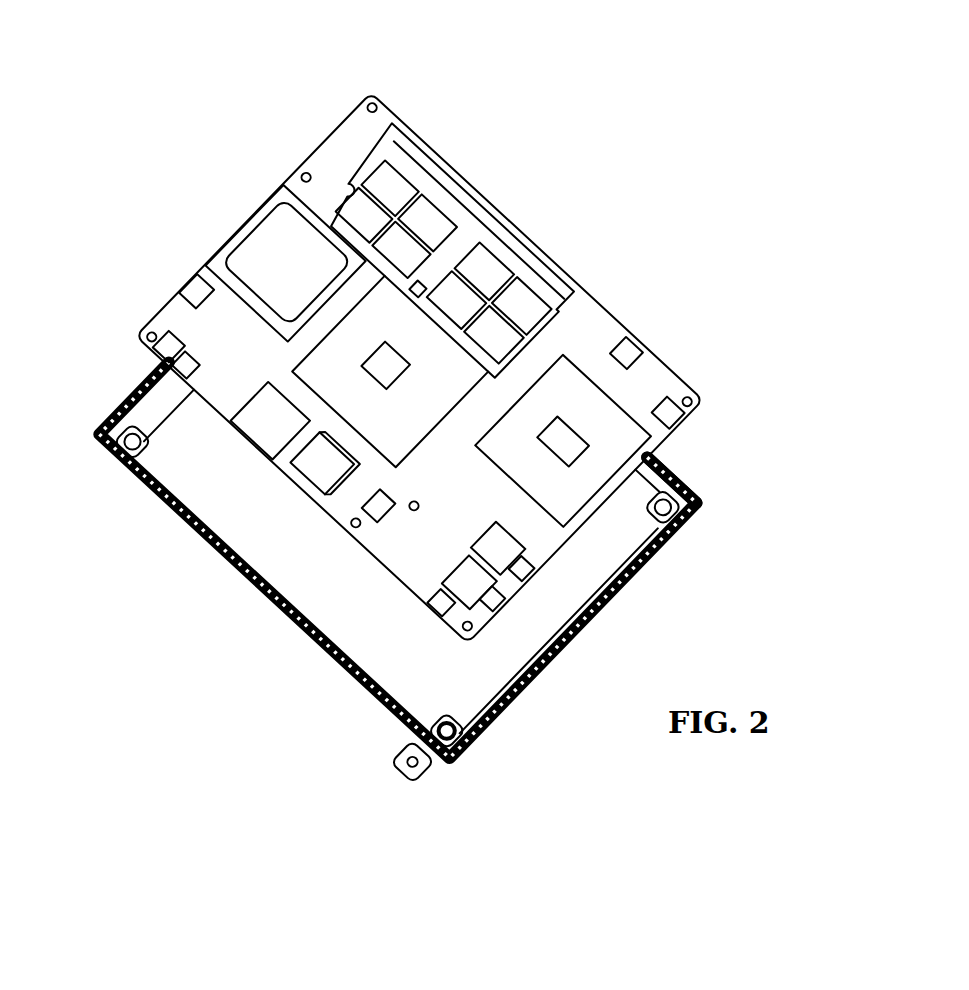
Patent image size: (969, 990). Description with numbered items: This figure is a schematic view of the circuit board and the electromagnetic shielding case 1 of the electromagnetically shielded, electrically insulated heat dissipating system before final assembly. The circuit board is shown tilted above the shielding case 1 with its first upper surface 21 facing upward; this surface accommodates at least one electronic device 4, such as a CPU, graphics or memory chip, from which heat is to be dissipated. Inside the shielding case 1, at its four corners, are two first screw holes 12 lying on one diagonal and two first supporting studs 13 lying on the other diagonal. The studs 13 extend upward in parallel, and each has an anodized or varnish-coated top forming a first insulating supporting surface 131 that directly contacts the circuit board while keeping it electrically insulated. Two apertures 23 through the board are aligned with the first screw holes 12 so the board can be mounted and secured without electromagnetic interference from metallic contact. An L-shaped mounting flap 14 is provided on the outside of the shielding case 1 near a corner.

The electromagnetic shielding case 1 is at (300, 638).
The electronic device 4 is at (275, 242).
The first screw hole 12 is at (463, 747).
The first supporting stud 13 is at (133, 450).
The first insulating supporting surface 131 is at (693, 497).
The L-shaped mounting flap 14 is at (398, 768).
The first upper surface 21 is at (603, 328).
The aperture 23 is at (383, 100).